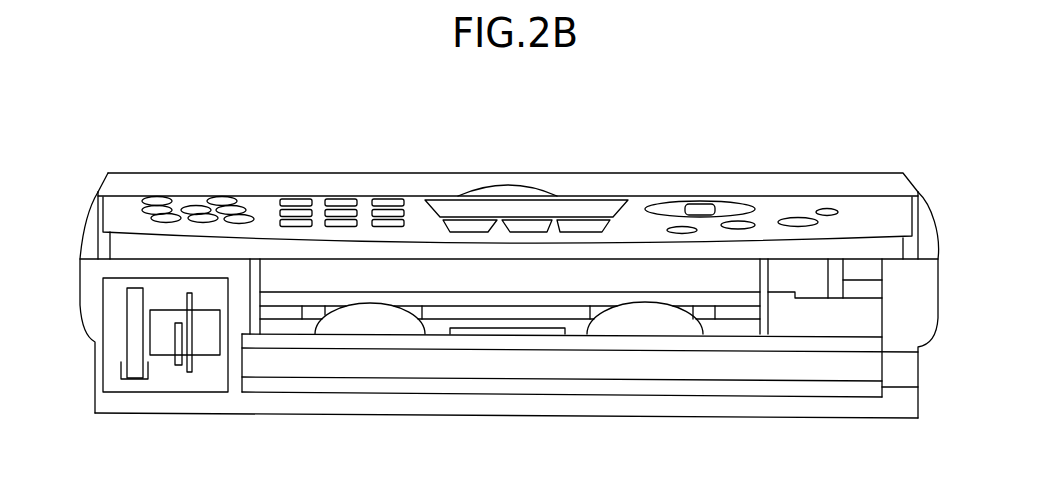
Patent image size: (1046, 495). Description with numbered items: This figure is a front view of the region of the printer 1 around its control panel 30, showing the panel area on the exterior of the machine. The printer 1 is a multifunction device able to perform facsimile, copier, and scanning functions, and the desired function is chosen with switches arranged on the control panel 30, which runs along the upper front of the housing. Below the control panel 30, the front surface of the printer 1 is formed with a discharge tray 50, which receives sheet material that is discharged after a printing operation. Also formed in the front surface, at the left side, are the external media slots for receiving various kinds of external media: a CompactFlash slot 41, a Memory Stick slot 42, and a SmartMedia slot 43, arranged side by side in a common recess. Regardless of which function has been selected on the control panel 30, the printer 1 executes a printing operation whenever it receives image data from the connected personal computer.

The printer 1 is at (792, 132).
The control panel 30 is at (633, 210).
The CompactFlash slot 41 is at (135, 379).
The Memory Stick slot 42 is at (179, 365).
The SmartMedia slot 43 is at (189, 372).
The discharge tray 50 is at (375, 310).